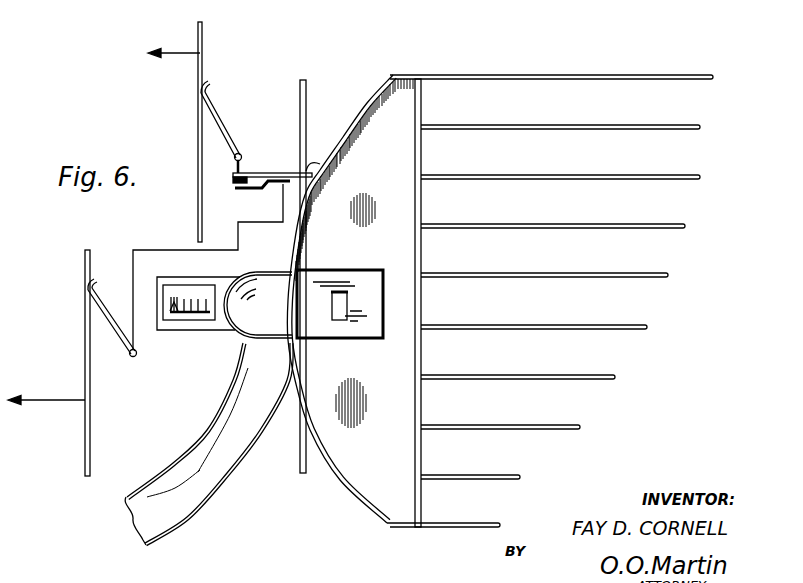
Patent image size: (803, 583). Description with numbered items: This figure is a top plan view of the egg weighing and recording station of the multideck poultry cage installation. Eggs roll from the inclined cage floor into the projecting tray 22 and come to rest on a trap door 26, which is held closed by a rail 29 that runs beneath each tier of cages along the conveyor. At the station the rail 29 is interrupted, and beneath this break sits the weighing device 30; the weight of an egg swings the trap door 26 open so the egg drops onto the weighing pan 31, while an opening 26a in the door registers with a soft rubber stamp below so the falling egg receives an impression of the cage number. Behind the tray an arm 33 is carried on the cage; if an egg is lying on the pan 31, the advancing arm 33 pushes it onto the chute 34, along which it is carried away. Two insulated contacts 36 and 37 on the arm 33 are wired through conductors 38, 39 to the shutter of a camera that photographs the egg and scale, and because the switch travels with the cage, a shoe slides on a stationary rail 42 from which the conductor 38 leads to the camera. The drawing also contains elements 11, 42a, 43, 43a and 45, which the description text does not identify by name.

The top rail 11 is at (557, 76).
The projecting tray 22 is at (350, 299).
The trap door 26 is at (345, 283).
The opening of the door 26a is at (340, 312).
The rail 29 is at (307, 114).
The weighing device 30 is at (220, 318).
The weighing pan 31 is at (257, 285).
The arm 33 is at (262, 173).
The chute 34 is at (198, 453).
The contact 36 is at (234, 180).
The contact 37 is at (236, 190).
The conductor 38 is at (174, 45).
The conductor 39 is at (49, 397).
The stationary rail 42 is at (198, 207).
The plate arm 42a is at (84, 277).
The lever 43 is at (228, 133).
The lever 43a is at (115, 337).
The scale 45 is at (178, 300).